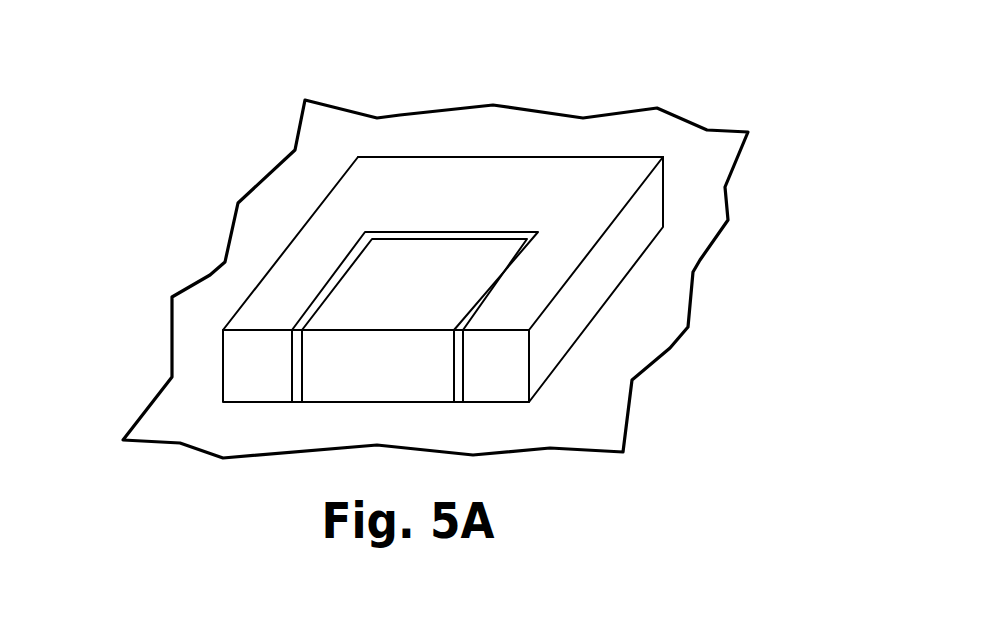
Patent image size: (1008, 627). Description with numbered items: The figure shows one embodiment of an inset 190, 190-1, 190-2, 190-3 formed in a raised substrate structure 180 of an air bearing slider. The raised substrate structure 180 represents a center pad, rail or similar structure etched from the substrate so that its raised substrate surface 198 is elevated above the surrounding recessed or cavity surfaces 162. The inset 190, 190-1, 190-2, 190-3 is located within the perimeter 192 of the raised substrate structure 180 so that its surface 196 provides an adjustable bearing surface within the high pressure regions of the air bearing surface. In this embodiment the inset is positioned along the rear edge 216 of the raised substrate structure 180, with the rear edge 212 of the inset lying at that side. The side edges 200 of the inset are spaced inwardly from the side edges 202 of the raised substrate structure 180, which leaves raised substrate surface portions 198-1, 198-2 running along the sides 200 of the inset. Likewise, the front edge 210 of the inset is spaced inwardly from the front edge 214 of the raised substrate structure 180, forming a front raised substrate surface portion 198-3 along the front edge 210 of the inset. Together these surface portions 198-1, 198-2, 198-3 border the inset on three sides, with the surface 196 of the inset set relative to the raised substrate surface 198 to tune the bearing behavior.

The recessed or cavity surfaces 162 is at (435, 279).
The raised substrate structure 180 is at (507, 235).
The inset 190 is at (444, 246).
The inset 190-1 is at (512, 23).
The inset 190-2 is at (452, 53).
The inset 190-3 is at (518, 53).
The perimeter 192 is at (342, 153).
The surface of the inset 196 is at (414, 284).
The raised substrate surface 198 is at (276, 314).
The raised substrate surface portion 198-1 is at (325, 256).
The raised substrate surface portion 198-2 is at (547, 260).
The front raised substrate surface portion 198-3 is at (527, 195).
The side edges of the inset 200 is at (354, 247).
The side edges of the raised substrate structure 202 is at (317, 203).
The front edge of the inset 210 is at (403, 232).
The rear edge of the inset 212 is at (376, 366).
The front substrate edge 214 is at (375, 157).
The rear substrate edge 216 is at (497, 377).